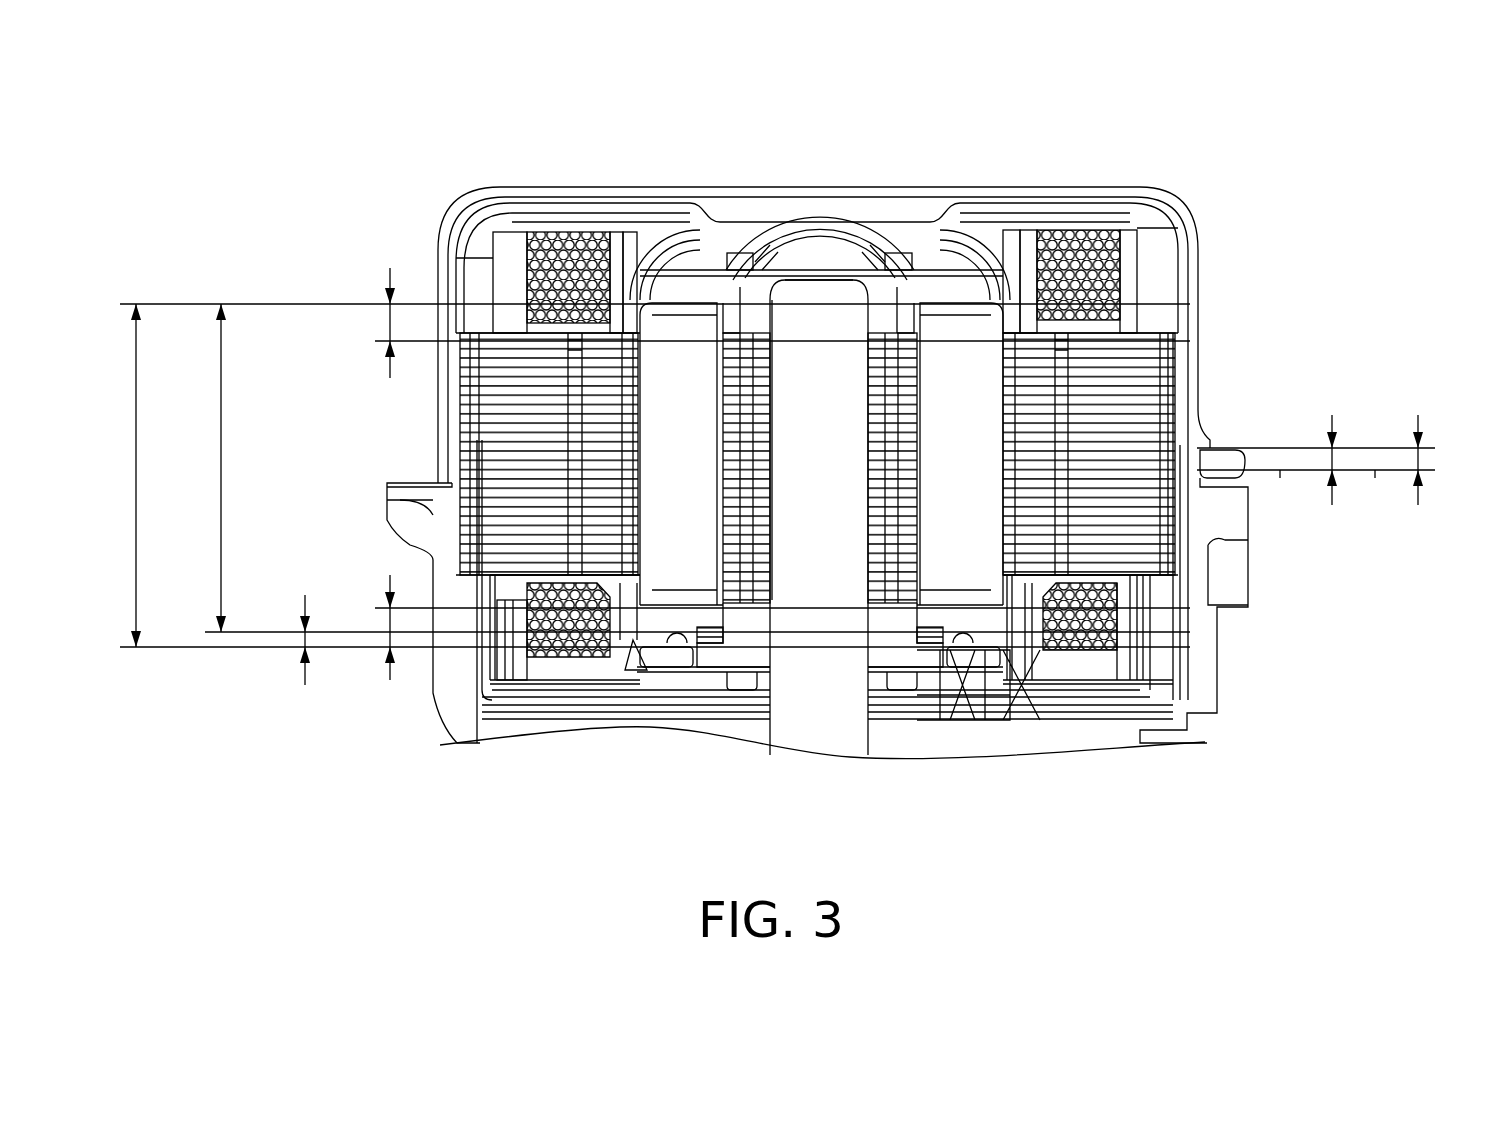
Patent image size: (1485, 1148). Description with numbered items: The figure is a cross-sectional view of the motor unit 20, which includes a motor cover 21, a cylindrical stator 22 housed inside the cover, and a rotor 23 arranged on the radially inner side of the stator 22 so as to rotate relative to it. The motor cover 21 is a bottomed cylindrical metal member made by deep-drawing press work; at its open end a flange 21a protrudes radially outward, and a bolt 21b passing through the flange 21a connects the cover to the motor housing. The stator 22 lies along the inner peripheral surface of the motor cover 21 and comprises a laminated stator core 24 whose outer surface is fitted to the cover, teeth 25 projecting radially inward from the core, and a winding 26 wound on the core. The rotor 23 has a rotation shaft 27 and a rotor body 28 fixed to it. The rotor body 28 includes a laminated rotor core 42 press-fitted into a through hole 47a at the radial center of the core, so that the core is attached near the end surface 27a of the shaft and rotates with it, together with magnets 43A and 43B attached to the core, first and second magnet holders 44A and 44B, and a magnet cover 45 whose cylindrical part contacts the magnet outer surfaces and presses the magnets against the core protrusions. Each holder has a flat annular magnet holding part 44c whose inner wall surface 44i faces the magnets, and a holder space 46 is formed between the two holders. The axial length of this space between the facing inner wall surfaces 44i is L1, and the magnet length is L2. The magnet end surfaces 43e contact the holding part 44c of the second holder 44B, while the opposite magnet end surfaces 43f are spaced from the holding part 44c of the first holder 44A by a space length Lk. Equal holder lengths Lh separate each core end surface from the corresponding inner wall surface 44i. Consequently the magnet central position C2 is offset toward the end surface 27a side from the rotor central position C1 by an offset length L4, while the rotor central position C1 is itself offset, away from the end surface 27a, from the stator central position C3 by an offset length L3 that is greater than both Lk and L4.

The motor unit 20 is at (555, 168).
The motor cover 21 is at (1085, 187).
The flange 21a is at (410, 483).
The bolt 21b is at (1225, 450).
The stator 22 is at (1210, 348).
The rotor 23 is at (705, 255).
The stator core 24 is at (1190, 555).
The teeth 25 is at (1135, 580).
The winding 26 is at (547, 240).
The rotation shaft 27 is at (830, 720).
The end surface 27a is at (830, 300).
The rotor body 28 is at (630, 240).
The rotor core 42 is at (878, 690).
The magnet 43A is at (440, 530).
The magnet 43B is at (818, 345).
The magnet end surface 43e is at (655, 250).
The magnet end surface 43f is at (640, 670).
The first magnet holder 44A is at (966, 690).
The second magnet holder 44B is at (925, 253).
The magnet holding part 44c is at (945, 270).
The inner wall surface 44i is at (705, 305).
The magnet cover 45 is at (470, 420).
The holder space 46 is at (690, 675).
The through hole 47a is at (785, 420).
The length of holder space L1 is at (644, 475).
The magnet length L2 is at (687, 468).
The offset length L3 is at (1332, 463).
The offset length L4 is at (1345, 462).
The holder length Lh is at (761, 474).
The space length Lk is at (276, 640).
The rotor central position C1 is at (1375, 472).
The magnet central position C2 is at (1282, 472).
The stator central position C3 is at (1360, 448).